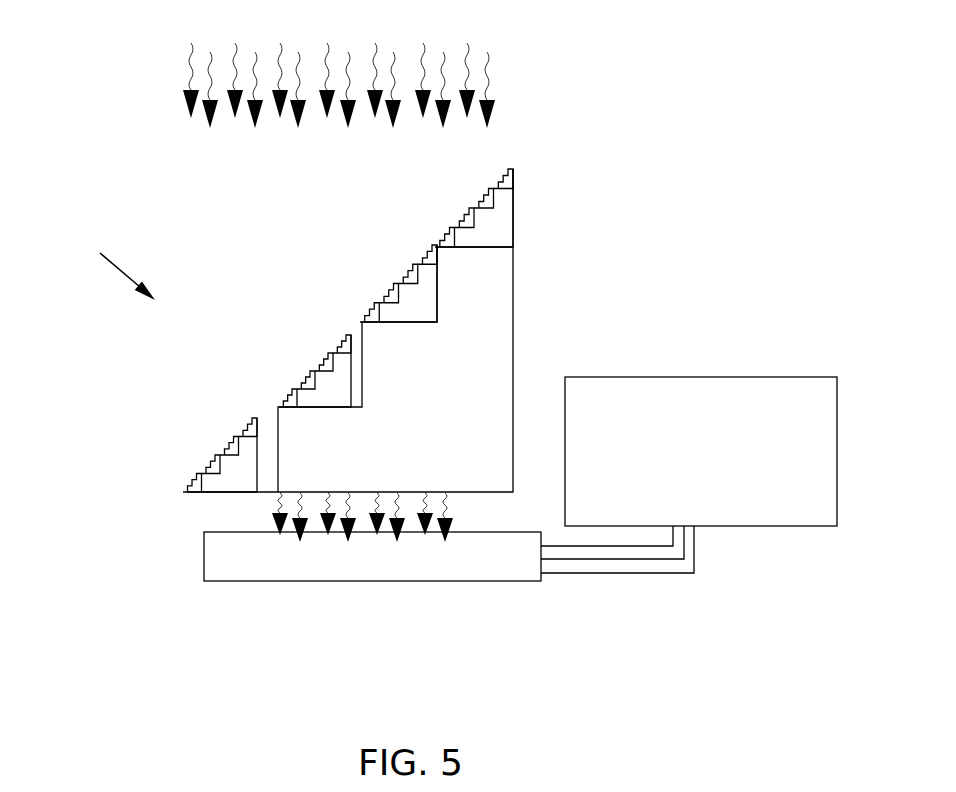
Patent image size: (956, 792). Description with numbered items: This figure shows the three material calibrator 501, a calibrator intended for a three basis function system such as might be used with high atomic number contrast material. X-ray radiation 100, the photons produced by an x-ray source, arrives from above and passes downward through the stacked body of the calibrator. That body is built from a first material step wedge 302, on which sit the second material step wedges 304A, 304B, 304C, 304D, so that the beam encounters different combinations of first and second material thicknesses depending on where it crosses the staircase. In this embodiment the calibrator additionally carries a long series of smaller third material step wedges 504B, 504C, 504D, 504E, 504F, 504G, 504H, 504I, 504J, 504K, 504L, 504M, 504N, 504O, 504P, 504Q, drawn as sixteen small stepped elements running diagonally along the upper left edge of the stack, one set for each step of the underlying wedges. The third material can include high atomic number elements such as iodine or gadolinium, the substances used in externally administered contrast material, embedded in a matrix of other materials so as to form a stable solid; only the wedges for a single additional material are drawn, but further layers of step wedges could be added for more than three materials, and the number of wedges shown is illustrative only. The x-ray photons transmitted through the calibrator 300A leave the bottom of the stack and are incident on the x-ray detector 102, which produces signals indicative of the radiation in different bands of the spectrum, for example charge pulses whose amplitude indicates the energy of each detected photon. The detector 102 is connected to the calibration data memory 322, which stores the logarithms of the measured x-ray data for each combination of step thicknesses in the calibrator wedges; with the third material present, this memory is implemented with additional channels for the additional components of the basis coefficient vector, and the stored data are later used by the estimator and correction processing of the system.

The x-ray radiation 100 is at (173, 100).
The three material calibrator 501 is at (70, 224).
The material 1 step wedge 302 is at (524, 288).
The material 2 step wedge 304A is at (520, 223).
The material 2 step wedge 304B is at (437, 289).
The material 2 step wedge 304C is at (351, 372).
The material 2 step wedge 304D is at (257, 461).
The third material step wedge 504B is at (496, 171).
The third material step wedge 504C is at (477, 200).
The third material step wedge 504D is at (458, 220).
The third material step wedge 504E is at (438, 240).
The third material step wedge 504F is at (421, 257).
The third material step wedge 504G is at (402, 276).
The third material step wedge 504H is at (382, 296).
The third material step wedge 504I is at (363, 315).
The third material step wedge 504J is at (336, 347).
The third material step wedge 504K is at (318, 365).
The third material step wedge 504L is at (300, 383).
The third material step wedge 504M is at (282, 401).
The third material step wedge 504N is at (242, 430).
The third material step wedge 504O is at (223, 448).
The third material step wedge 504P is at (204, 467).
The third material step wedge 504Q is at (186, 486).
The x-ray photons transmitted through calibrator 300A is at (263, 527).
The x-ray detector 102 is at (368, 582).
The calibration data memory 322 is at (790, 534).